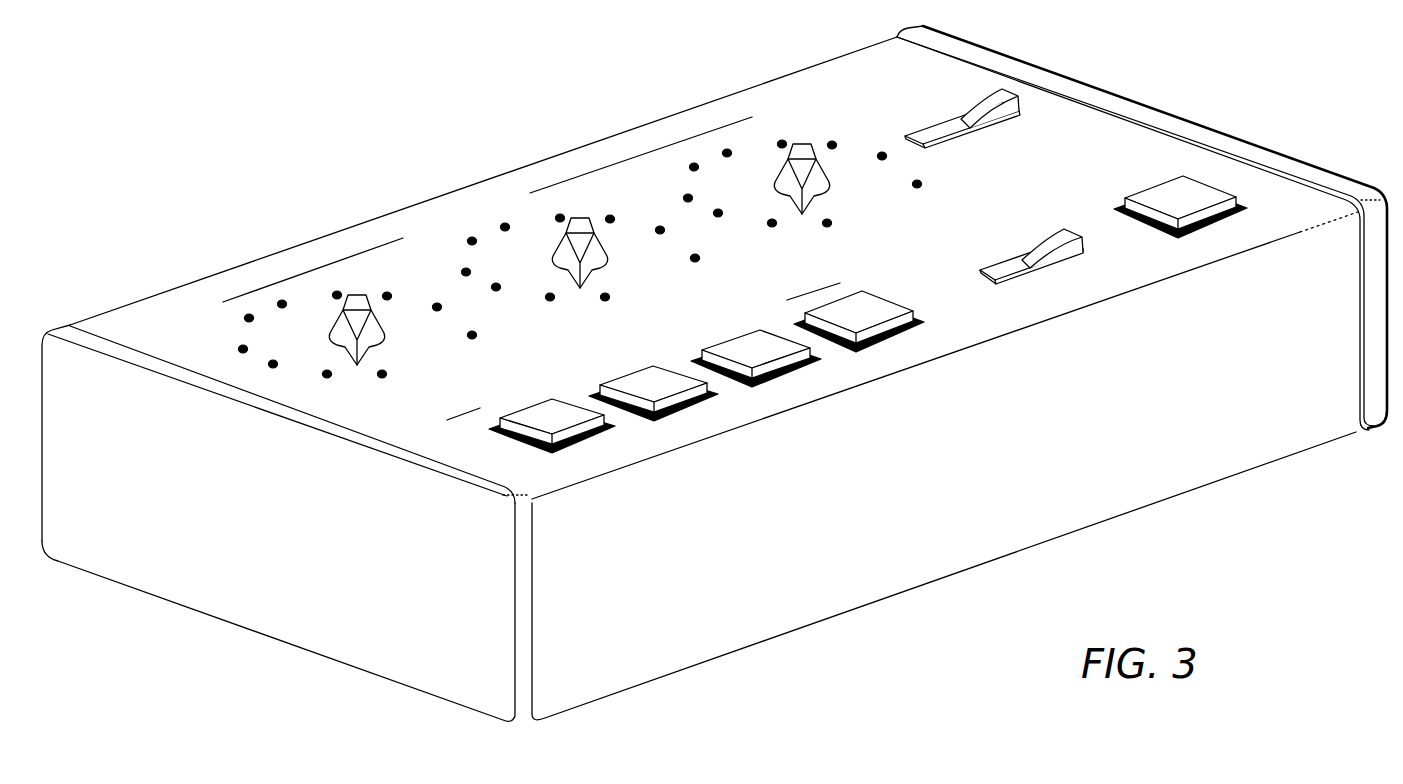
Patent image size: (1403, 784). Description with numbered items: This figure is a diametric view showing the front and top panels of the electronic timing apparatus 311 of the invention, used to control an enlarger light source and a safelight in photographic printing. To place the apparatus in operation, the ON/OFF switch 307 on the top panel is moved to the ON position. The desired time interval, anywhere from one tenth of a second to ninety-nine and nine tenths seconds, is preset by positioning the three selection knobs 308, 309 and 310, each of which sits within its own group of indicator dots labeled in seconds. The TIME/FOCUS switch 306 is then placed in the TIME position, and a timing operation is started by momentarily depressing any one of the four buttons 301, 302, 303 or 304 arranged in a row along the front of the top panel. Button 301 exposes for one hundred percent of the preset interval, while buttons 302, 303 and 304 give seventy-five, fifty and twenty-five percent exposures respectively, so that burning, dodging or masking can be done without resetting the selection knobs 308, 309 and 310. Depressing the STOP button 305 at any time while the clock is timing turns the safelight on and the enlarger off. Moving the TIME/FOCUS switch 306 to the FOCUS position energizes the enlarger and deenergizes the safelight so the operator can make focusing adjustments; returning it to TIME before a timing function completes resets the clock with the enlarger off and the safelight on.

The button 301 is at (533, 415).
The button 302 is at (657, 385).
The button 303 is at (752, 350).
The button 304 is at (870, 315).
The STOP button 305 is at (1182, 191).
The TIME/FOCUS switch 306 is at (1053, 245).
The ON/OFF switch 307 is at (1005, 95).
The selection knob 308 is at (801, 144).
The selection knob 309 is at (579, 218).
The selection knob 310 is at (357, 295).
The timer control unit housing 311 is at (575, 113).